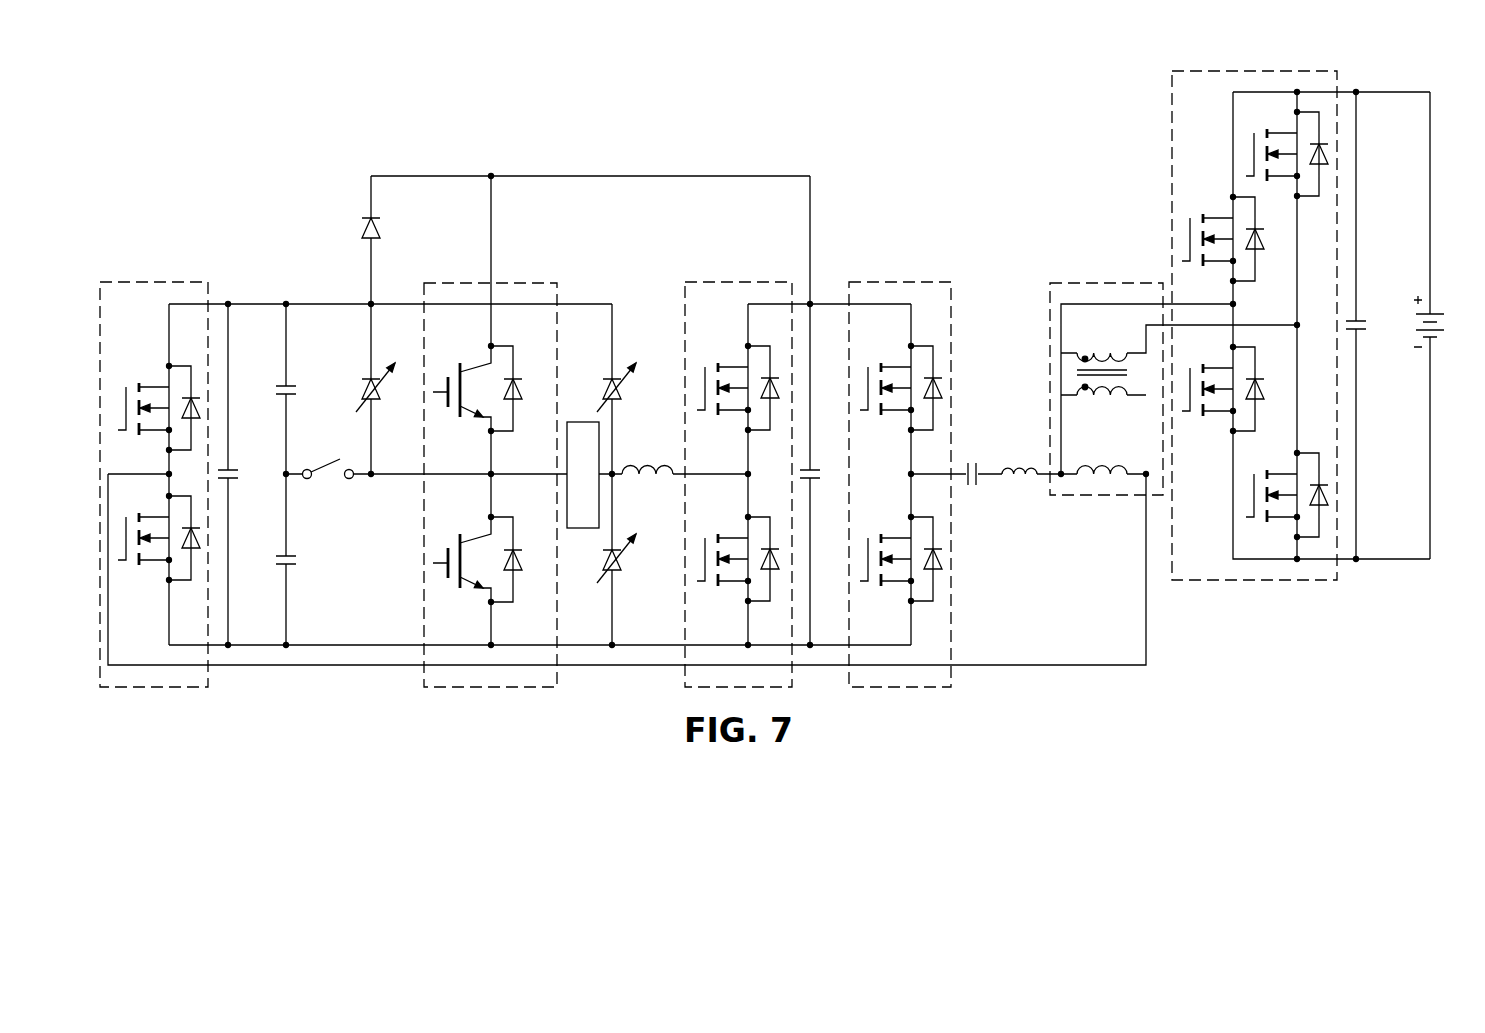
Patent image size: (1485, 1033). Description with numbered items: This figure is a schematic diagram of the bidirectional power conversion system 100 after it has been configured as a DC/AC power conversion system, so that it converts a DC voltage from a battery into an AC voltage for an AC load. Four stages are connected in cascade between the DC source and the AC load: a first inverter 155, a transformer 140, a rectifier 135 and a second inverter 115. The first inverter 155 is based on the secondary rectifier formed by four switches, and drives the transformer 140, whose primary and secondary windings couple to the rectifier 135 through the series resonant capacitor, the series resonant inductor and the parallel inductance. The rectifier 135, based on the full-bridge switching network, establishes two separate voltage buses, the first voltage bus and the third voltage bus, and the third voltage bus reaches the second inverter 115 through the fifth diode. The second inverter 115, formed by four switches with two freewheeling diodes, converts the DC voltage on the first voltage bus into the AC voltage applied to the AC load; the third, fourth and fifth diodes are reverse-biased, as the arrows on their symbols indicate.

The bidirectional power conversion system 100 is at (261, 114).
The second inverter 115 is at (528, 283).
The rectifier 135 is at (153, 283).
The transformer 140 is at (1105, 283).
The first inverter 155 is at (1255, 582).